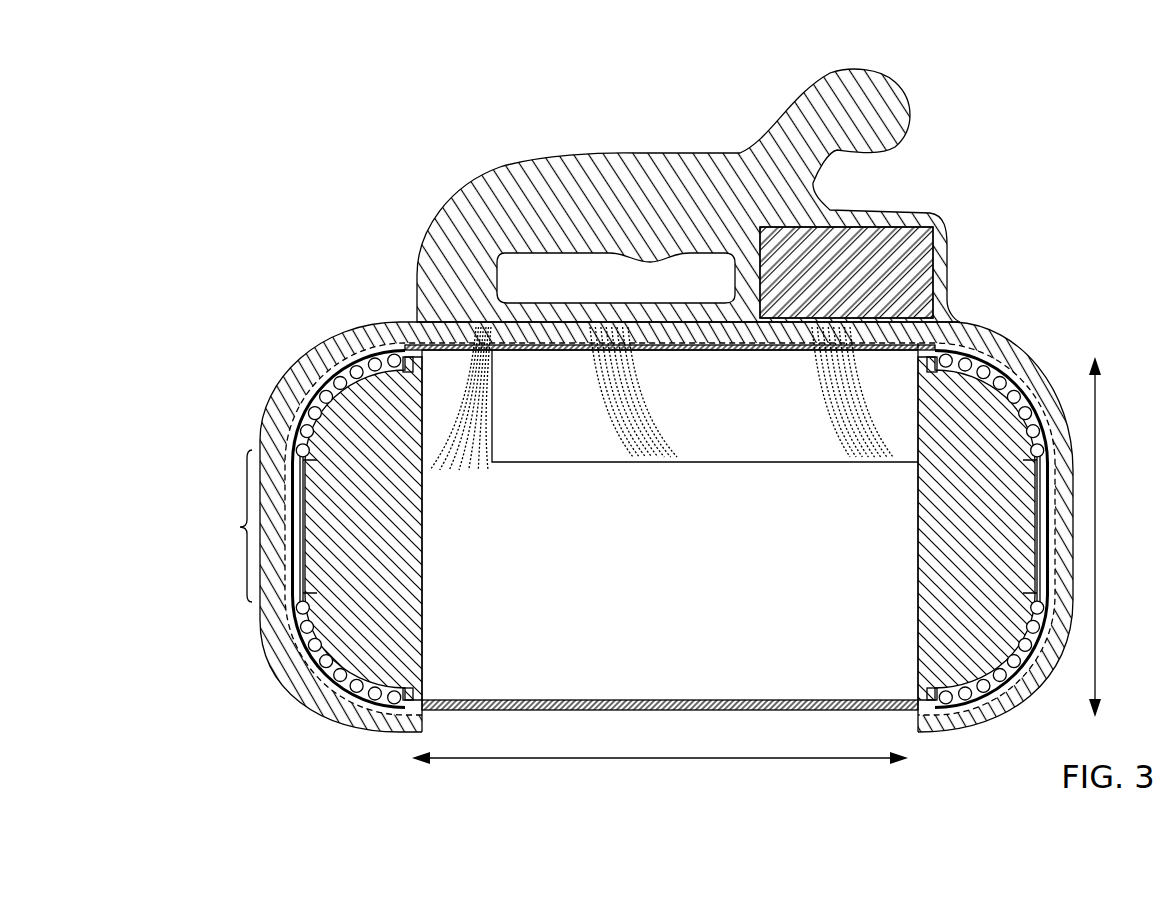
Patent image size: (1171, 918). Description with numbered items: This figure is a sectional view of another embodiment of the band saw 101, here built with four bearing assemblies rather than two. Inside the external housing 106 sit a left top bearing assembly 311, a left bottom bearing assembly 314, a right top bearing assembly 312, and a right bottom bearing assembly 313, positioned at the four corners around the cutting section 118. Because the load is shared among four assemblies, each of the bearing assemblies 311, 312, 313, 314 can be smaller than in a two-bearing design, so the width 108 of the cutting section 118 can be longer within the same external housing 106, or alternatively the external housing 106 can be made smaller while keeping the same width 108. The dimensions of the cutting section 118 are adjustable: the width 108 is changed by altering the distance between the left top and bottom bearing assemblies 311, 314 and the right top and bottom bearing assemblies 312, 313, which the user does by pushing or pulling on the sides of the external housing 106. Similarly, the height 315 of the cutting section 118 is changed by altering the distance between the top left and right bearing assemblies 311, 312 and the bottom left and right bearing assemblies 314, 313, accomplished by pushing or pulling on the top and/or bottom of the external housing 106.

The band saw 101 is at (345, 160).
The external housing 106 is at (1036, 362).
The width 108 is at (660, 778).
The cutting section 118 is at (652, 581).
The left top bearing assembly 311 is at (388, 470).
The right top bearing assembly 312 is at (1000, 410).
The right bottom bearing assembly 313 is at (1007, 670).
The left bottom bearing assembly 314 is at (340, 665).
The height 315 is at (215, 527).